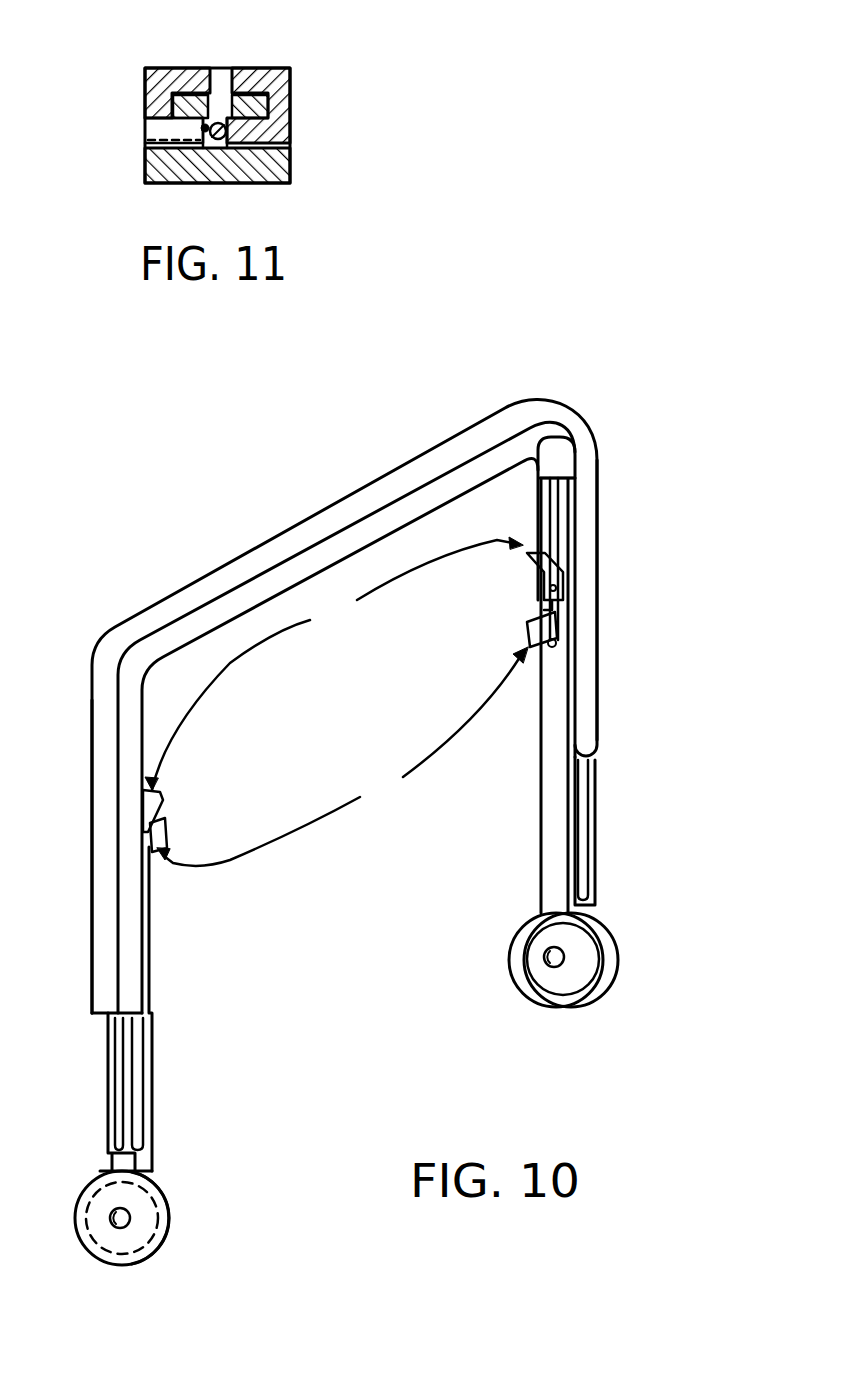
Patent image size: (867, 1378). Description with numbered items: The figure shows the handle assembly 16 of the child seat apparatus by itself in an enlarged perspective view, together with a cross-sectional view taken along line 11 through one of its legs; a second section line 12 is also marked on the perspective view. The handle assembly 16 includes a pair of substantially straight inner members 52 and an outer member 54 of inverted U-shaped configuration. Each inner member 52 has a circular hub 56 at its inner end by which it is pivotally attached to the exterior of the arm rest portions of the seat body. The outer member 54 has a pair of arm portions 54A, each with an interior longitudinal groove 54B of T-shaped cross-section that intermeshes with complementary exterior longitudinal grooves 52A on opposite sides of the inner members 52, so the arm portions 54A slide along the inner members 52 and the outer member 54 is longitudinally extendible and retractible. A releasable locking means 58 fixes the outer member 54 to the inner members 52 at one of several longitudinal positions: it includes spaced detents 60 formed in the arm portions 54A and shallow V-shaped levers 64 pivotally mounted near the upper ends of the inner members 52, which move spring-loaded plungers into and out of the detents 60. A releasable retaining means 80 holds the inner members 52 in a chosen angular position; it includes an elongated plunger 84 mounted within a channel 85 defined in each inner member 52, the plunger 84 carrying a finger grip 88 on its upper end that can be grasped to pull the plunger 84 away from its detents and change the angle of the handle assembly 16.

In FIG. 10, the handle assembly 16 is at (470, 424).
In FIG. 11, the outer member 54 is at (264, 67).
In FIG. 10, the outer member 54 is at (88, 735).
In FIG. 11, the arm portions 54A is at (168, 68).
In FIG. 10, the arm portions 54A is at (103, 895).
In FIG. 11, the interior longitudinal groove 54B is at (205, 130).
In FIG. 10, the interior longitudinal groove 54B is at (572, 470).
In FIG. 11, the inner members 52 is at (176, 186).
In FIG. 10, the inner members 52 is at (152, 1047).
In FIG. 11, the exterior longitudinal grooves 52A is at (158, 138).
In FIG. 10, the exterior longitudinal grooves 52A is at (140, 1095).
In FIG. 11, the channel 85 is at (219, 122).
In FIG. 10, the channel 85 is at (121, 1104).
In FIG. 11, the elongated plunger 84 is at (221, 140).
In FIG. 10, the circular hubs 56 is at (157, 1251).
In FIG. 10, the detents 60 is at (562, 500).
In FIG. 10, the levers 64 is at (157, 793).
In FIG. 10, the finger grips 88 is at (165, 830).
In FIG. 10, the releasable locking means 58 is at (334, 663).
In FIG. 10, the releasable retaining means 80 is at (342, 756).
In FIG. 10, the section line 12- 12 is at (485, 503).
In FIG. 10, the section line 11- 11 is at (617, 683).